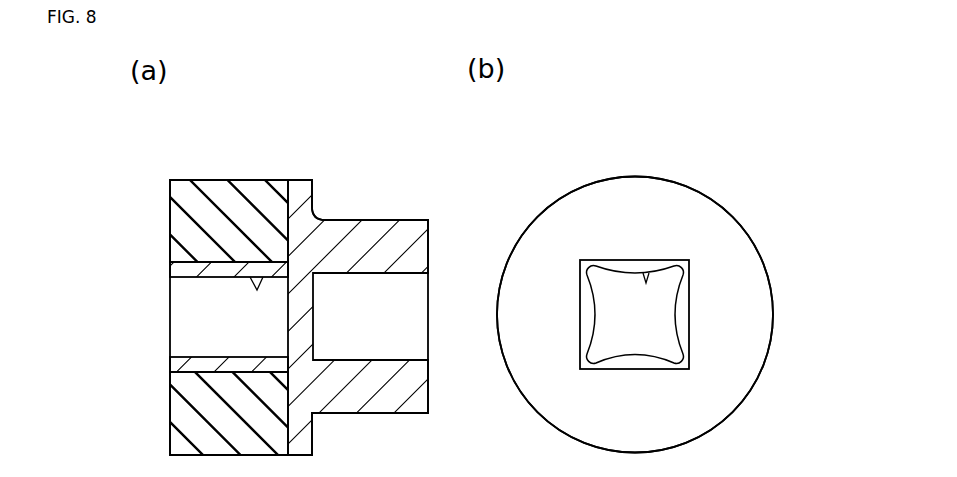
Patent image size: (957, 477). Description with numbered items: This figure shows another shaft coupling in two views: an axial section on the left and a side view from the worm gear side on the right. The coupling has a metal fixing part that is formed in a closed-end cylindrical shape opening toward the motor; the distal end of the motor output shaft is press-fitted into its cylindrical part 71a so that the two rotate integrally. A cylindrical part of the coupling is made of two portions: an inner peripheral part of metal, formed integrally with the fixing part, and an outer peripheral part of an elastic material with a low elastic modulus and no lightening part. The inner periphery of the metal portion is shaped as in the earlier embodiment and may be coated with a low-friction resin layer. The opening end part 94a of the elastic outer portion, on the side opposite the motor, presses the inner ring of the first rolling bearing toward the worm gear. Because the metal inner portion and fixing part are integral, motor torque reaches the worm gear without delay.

The opening end part 94a is at (174, 180).
The cylindrical part 71a is at (383, 218).